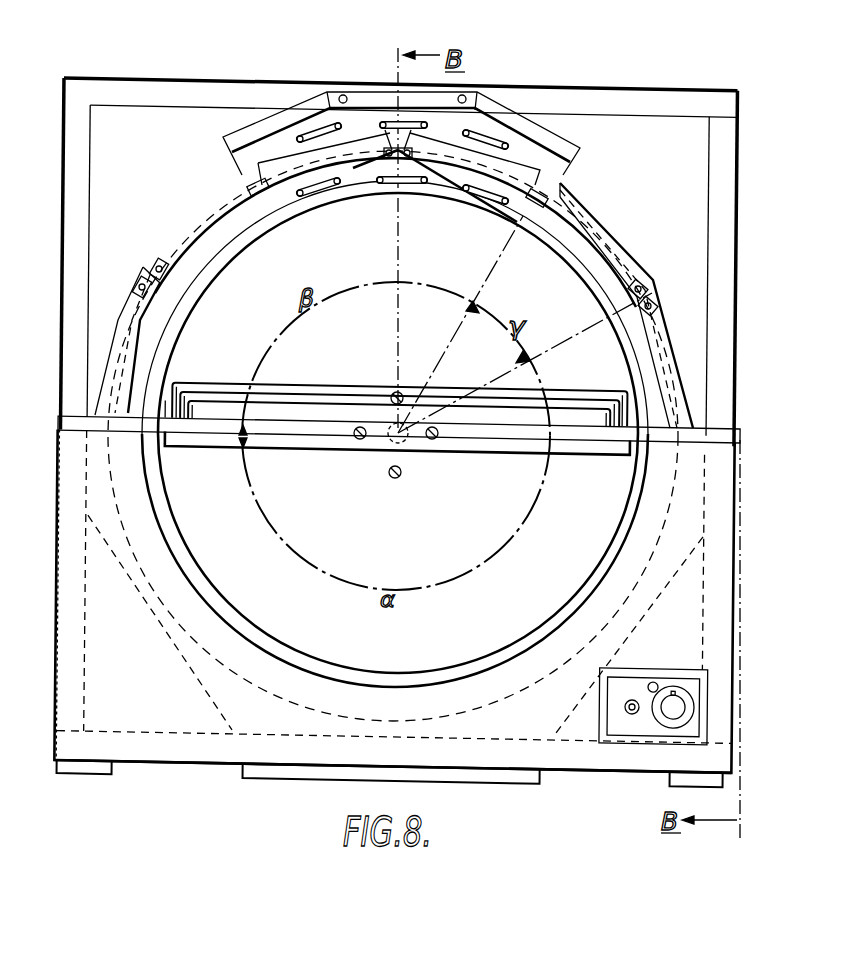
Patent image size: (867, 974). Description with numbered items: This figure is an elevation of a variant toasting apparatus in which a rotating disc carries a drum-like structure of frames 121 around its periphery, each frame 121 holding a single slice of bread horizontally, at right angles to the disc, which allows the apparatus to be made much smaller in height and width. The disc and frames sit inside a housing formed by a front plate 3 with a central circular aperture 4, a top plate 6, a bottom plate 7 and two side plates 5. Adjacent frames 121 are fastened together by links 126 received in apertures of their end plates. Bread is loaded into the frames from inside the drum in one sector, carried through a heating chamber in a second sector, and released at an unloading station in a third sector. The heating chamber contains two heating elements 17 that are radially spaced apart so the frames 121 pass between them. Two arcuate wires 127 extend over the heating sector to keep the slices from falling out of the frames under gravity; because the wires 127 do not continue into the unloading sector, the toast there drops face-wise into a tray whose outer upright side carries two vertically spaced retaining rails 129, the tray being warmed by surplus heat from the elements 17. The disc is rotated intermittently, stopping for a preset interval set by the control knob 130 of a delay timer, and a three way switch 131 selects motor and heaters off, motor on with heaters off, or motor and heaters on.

The front plate 3 is at (247, 711).
The central circular aperture 4 is at (291, 634).
The side plates 5 is at (52, 562).
The top plate 6 is at (564, 88).
The bottom plate 7 is at (153, 768).
The heating elements 17 is at (299, 134).
The frames 121 is at (152, 266).
The links 126 is at (642, 298).
The arcuate wires 127 is at (180, 293).
The retaining rails 129 is at (576, 414).
The control knob 130 is at (680, 723).
The three way switch 131 is at (627, 702).